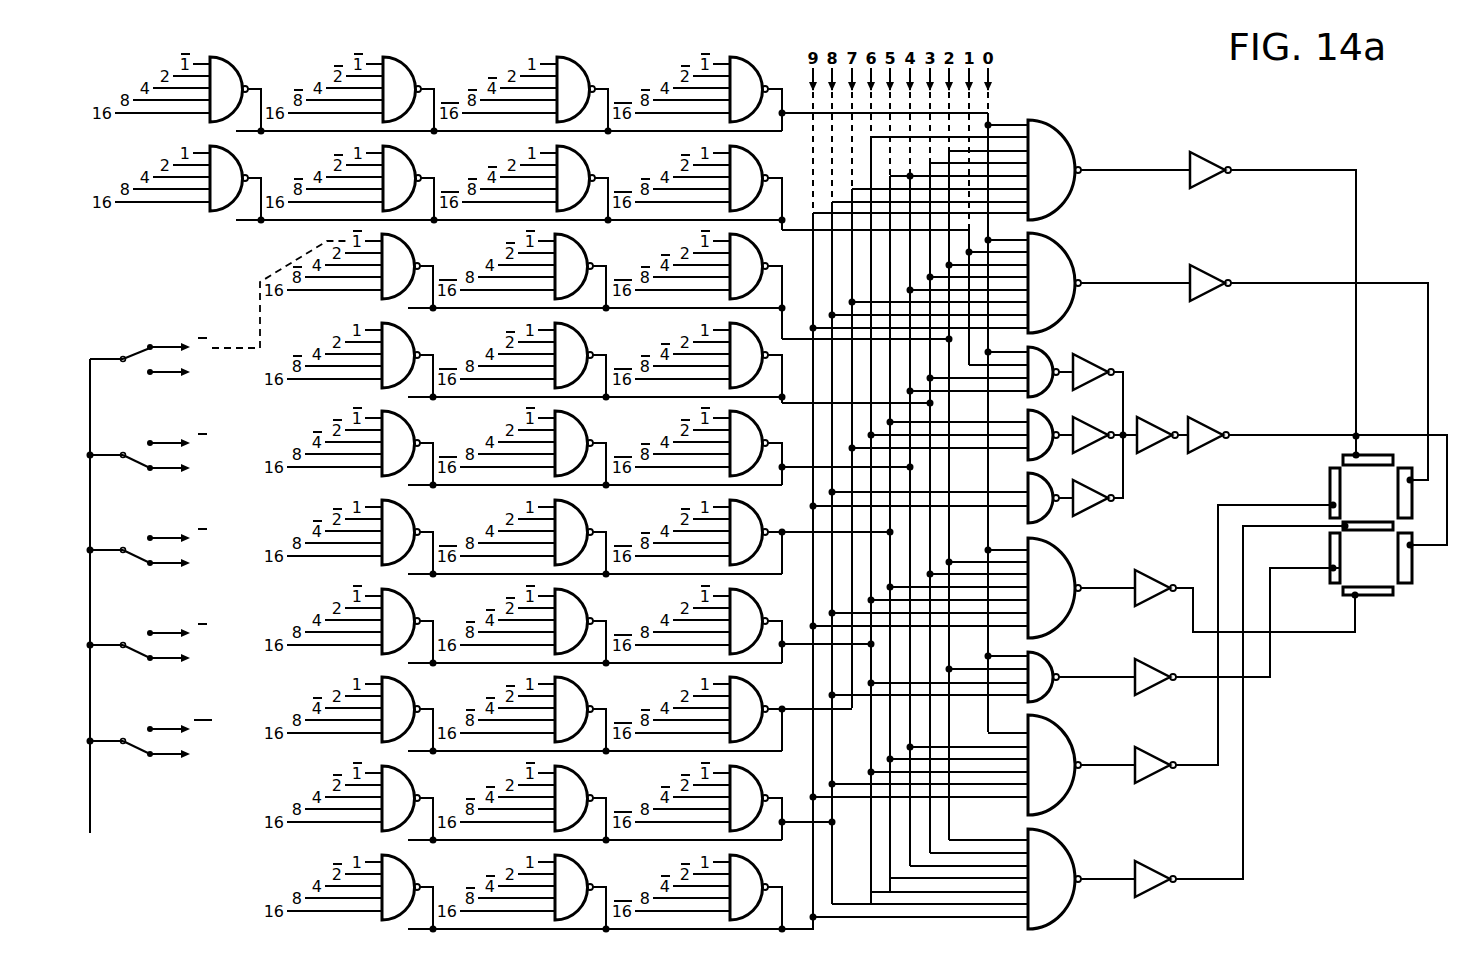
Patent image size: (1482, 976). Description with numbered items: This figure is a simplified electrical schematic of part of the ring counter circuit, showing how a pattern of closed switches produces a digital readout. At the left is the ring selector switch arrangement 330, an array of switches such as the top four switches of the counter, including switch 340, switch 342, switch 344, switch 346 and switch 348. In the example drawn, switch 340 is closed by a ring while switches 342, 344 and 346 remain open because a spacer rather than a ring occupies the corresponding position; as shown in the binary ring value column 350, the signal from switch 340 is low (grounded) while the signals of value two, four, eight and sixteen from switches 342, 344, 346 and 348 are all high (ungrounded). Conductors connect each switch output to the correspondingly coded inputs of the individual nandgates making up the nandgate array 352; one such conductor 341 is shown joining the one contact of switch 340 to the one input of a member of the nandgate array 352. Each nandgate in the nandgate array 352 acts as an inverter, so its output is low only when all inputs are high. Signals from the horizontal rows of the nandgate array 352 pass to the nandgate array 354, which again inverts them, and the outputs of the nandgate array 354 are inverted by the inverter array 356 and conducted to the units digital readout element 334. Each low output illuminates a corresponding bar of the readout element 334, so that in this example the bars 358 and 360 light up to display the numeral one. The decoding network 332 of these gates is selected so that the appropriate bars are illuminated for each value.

The ring selector switch arrangement 330 is at (135, 792).
The decoder gate matrix 332 is at (236, 857).
The units digital readout element 334 is at (1308, 419).
The switch 340 is at (124, 356).
The conductor 341 is at (260, 318).
The switch 342 is at (124, 452).
The switch 344 is at (124, 547).
The switch 346 is at (124, 642).
The switch 348 is at (124, 738).
The binary ring value column 350 is at (180, 764).
The nandgate array 352 is at (140, 47).
The nandgate array 354 is at (1030, 100).
The inverter array 356 is at (1092, 131).
The bar 358 is at (1398, 498).
The bar 360 is at (1398, 566).